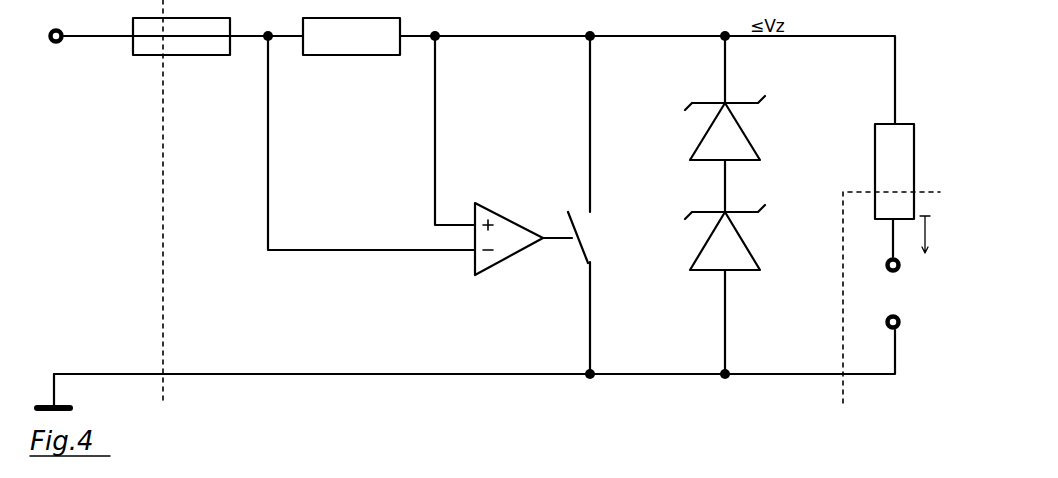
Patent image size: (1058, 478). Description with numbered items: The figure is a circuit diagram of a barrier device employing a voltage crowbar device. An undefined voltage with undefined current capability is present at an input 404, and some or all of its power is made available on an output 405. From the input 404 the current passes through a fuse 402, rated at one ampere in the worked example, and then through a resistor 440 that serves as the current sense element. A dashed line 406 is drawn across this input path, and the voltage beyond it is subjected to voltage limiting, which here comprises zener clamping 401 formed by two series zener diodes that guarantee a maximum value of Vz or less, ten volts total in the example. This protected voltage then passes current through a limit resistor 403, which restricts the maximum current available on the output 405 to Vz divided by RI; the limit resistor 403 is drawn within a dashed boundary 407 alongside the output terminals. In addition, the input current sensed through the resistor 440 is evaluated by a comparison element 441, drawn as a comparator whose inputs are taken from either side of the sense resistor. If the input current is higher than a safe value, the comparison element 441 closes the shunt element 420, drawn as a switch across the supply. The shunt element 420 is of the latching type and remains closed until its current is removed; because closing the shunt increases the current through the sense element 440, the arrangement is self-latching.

The input 404 is at (55, 54).
The fuse 402 is at (194, 58).
The resistor (sense element) 440 is at (352, 58).
The comparison element 441 is at (505, 218).
The shunt element 420 is at (586, 244).
The zener clamping 401 is at (690, 165).
The limit resistor 403 is at (872, 148).
The output 405 is at (892, 294).
The boundary 406 is at (165, 325).
The load boundary 407 is at (839, 325).